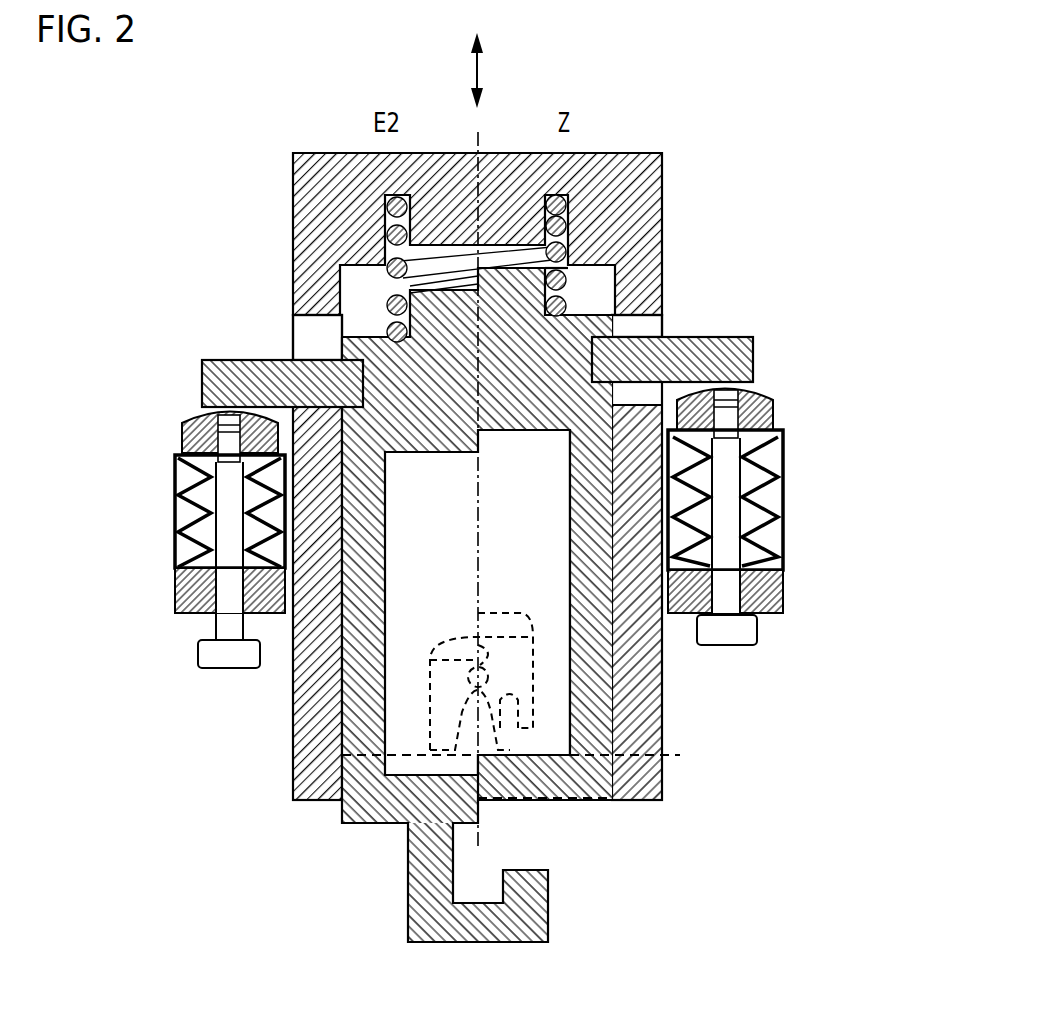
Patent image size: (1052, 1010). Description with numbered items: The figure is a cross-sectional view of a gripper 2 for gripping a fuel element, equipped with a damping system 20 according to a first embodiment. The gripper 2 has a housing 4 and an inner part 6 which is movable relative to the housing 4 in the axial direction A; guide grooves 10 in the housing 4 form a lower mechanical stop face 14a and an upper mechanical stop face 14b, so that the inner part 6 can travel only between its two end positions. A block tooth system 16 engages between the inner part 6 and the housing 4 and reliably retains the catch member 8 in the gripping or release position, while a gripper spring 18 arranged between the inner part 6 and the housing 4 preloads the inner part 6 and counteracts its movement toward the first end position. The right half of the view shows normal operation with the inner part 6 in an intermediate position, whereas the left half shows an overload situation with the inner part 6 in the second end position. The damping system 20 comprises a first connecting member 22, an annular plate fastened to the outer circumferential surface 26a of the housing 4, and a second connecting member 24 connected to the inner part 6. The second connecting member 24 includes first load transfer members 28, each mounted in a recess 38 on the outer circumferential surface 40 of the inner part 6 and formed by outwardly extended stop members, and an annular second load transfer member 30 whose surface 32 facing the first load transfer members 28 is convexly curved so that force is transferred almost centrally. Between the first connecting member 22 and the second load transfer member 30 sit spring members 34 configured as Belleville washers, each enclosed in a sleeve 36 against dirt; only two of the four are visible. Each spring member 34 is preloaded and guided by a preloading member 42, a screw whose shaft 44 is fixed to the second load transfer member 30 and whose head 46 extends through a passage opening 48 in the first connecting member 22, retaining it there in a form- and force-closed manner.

The gripper 2 is at (830, 114).
The housing 4 is at (655, 200).
The inner part 6 is at (598, 720).
The catch member 8 is at (420, 897).
The guide grooves 10 is at (305, 340).
The lower mechanical stop face 14a is at (622, 401).
The upper mechanical stop face 14b is at (307, 323).
The block tooth system 16 is at (507, 655).
The gripper spring 18 is at (570, 222).
The damping system 20 is at (464, 532).
The first connecting member 22 is at (187, 613).
The second connecting member 24 is at (775, 340).
The outer circumferential surface of the housing 26a is at (662, 760).
The first load transfer members 28 is at (212, 385).
The second load transfer member 30 is at (190, 430).
The surface 32 is at (760, 393).
The spring members 34 is at (203, 480).
The sleeve 36 is at (170, 533).
The recess 38 is at (618, 352).
The outer circumferential surface of the inner part 40 is at (622, 668).
The preloading member 42 is at (216, 545).
The shaft 44 is at (230, 443).
The head 46 is at (230, 662).
The passage opening 48 is at (187, 596).
The axial direction A is at (480, 75).